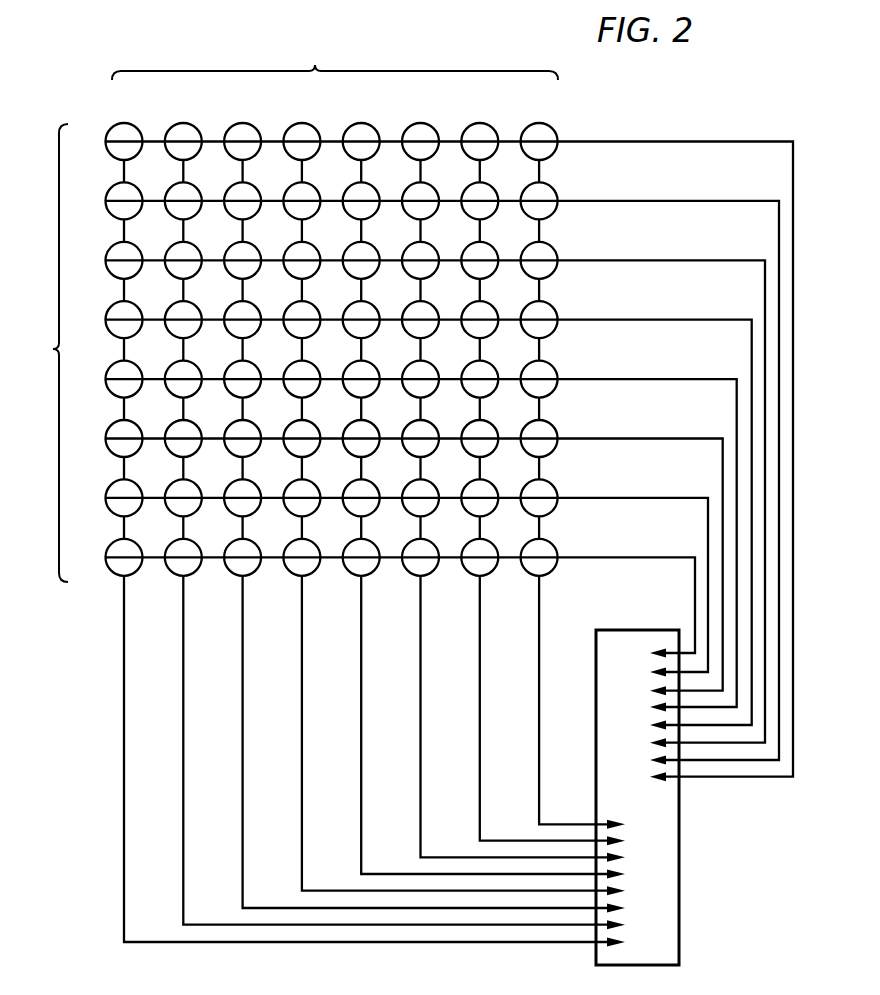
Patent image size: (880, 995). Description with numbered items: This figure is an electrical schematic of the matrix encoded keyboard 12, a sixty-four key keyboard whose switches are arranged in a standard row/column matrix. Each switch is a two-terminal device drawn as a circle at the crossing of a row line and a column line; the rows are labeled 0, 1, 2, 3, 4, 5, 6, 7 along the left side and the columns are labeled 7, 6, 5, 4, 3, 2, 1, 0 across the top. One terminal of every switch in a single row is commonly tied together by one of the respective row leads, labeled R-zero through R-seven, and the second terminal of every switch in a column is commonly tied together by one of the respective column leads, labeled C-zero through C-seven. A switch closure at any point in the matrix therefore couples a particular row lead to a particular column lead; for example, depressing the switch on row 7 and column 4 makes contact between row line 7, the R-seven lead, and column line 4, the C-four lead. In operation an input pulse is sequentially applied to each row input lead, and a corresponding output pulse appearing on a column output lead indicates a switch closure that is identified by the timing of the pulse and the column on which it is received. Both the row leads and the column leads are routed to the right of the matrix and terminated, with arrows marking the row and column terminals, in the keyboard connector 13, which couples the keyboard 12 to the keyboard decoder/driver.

The keyboard switch matrix 12 is at (86, 693).
The keyboard connector 13 is at (679, 832).
The row/column 0 line 0 is at (383, 456).
The row/column 1 line 1 is at (389, 464).
The row/column 2 line 2 is at (396, 472).
The row/column 3 line 3 is at (403, 481).
The column line 4 is at (411, 489).
The row/column 5 line 5 is at (418, 498).
The row/column 6 line 6 is at (425, 506).
The row line 7 is at (432, 515).